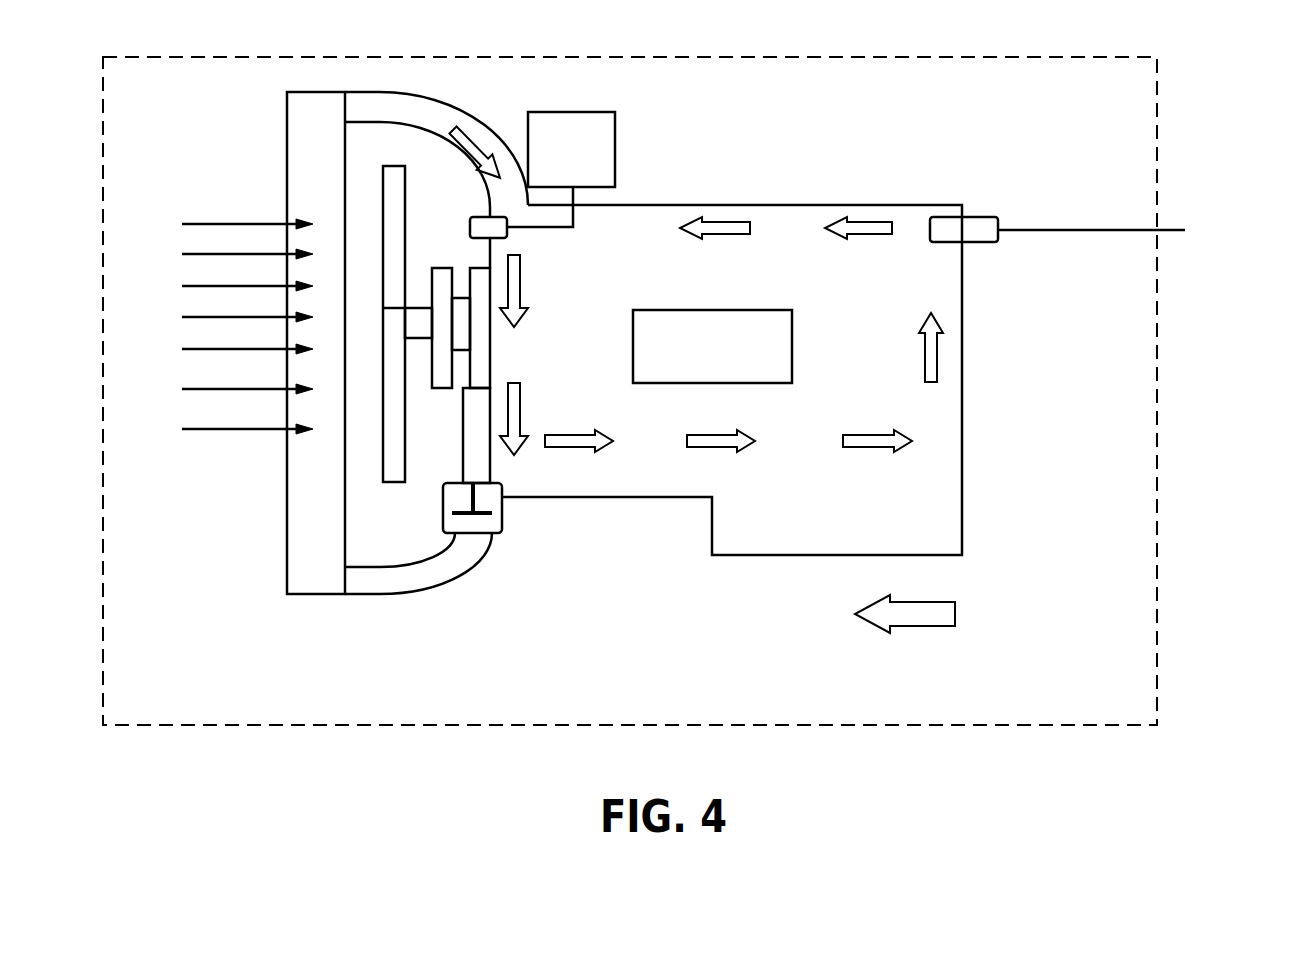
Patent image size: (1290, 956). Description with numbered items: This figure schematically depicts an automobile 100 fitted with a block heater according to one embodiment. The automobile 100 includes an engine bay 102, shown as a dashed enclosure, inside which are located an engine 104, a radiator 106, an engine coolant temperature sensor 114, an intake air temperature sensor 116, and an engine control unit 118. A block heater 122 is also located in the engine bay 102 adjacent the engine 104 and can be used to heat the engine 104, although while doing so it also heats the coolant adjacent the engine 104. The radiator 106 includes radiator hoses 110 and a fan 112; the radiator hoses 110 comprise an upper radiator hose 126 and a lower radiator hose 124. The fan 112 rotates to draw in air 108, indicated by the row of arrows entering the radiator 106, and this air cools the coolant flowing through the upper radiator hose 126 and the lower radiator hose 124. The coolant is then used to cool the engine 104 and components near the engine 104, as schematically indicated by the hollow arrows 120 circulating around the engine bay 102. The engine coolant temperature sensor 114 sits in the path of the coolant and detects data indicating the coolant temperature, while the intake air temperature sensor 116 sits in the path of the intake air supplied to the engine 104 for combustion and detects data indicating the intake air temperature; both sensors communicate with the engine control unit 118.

The automobile 100 is at (1160, 383).
The engine bay 102 is at (965, 391).
The engine 104 is at (722, 310).
The radiator 106 is at (290, 474).
The air 108 is at (225, 223).
The radiator hoses 110 is at (400, 97).
The fan 112 is at (391, 482).
The engine coolant temperature sensor 114 is at (478, 217).
The intake air temperature sensor 116 is at (502, 505).
The engine control unit 118 is at (565, 112).
The arrows 120 is at (573, 432).
The block heater 122 is at (978, 217).
The lower radiator hose 124 is at (443, 567).
The upper radiator hose 126 is at (441, 107).